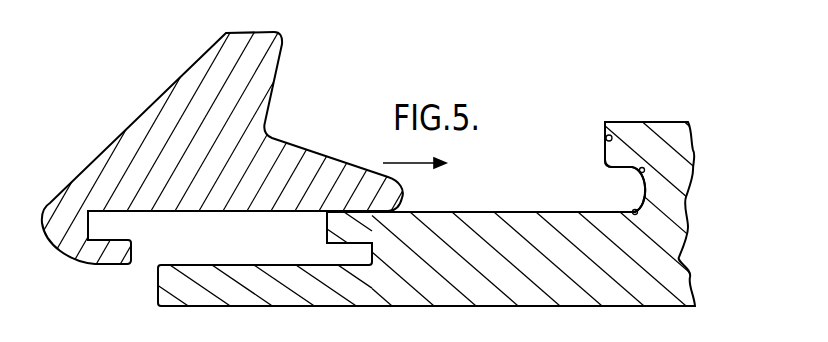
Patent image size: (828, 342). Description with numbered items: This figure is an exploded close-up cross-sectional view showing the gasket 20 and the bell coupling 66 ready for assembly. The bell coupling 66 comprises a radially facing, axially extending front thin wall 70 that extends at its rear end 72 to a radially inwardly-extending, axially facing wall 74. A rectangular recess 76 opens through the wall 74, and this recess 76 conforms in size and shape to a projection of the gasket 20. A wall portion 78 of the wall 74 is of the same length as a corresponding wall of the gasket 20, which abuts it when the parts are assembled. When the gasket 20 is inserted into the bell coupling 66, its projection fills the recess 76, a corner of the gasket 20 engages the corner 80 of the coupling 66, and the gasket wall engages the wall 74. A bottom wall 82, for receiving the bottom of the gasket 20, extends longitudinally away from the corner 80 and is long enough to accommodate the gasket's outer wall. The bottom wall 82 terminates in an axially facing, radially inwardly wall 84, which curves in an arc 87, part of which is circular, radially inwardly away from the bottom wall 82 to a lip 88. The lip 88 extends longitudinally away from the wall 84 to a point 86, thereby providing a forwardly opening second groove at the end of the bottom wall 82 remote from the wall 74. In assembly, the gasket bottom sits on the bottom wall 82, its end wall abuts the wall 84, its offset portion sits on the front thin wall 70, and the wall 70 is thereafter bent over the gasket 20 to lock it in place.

The gasket 20 is at (137, 122).
The bell coupling 66 is at (463, 278).
The front thin wall 70 is at (228, 290).
The rear end 72 is at (317, 290).
The axially facing wall 74 is at (316, 232).
The rectangular recess 76 is at (337, 252).
The wall portion 78 is at (331, 217).
The corner 80 is at (327, 213).
The bottom wall 82 is at (515, 212).
The axially facing radially inwardly wall 84 is at (633, 209).
The point 86 is at (606, 138).
The arc 87 is at (639, 170).
The lip 88 is at (604, 121).